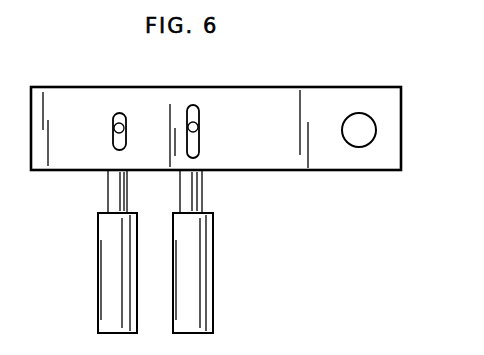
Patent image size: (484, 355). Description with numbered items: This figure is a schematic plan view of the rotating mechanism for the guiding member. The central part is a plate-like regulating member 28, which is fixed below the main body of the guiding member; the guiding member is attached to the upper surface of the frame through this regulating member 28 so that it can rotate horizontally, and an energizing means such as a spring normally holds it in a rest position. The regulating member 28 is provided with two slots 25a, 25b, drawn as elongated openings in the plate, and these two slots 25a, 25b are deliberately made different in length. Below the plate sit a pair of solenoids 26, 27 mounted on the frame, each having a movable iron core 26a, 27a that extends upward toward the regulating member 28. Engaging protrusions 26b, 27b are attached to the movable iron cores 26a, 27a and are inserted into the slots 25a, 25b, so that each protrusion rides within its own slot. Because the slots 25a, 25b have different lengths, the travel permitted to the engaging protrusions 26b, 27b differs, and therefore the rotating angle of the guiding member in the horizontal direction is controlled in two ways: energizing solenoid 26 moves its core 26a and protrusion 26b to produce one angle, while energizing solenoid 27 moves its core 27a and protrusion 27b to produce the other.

The regulating member 28 is at (64, 95).
The engaging protrusion 26b is at (113, 130).
The slot 25a is at (122, 116).
The slot 25b is at (198, 151).
The engaging protrusion 27b is at (197, 118).
The movable iron core 26a is at (108, 193).
The solenoid 26 is at (98, 289).
The movable iron core 27a is at (201, 193).
The solenoid 27 is at (205, 290).